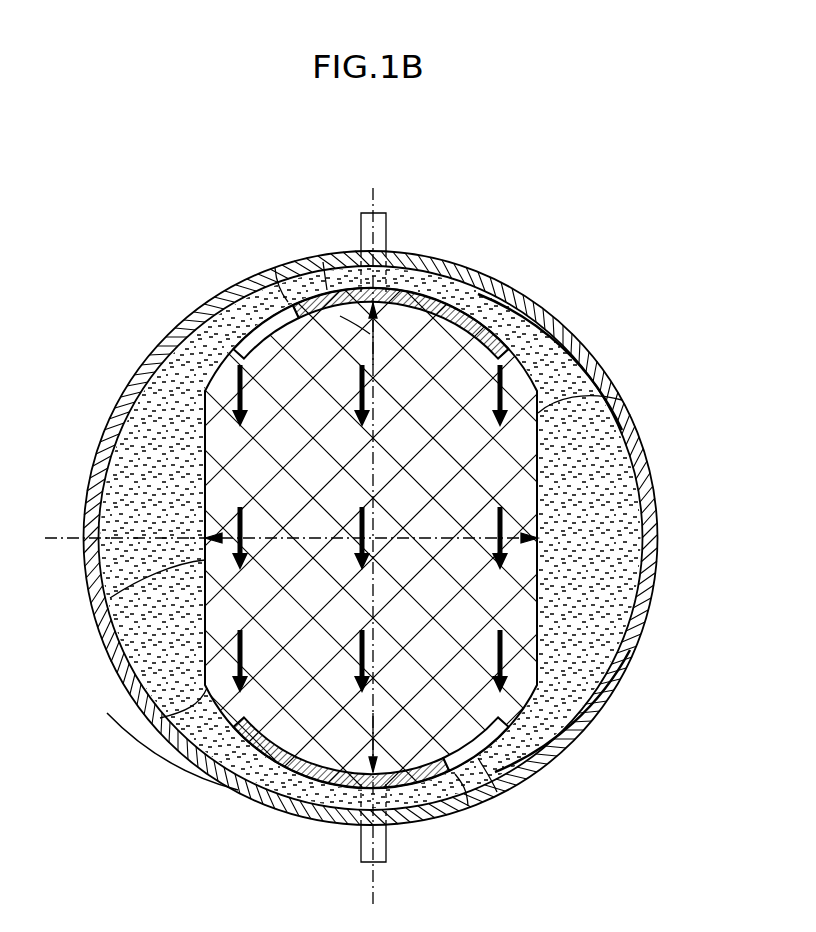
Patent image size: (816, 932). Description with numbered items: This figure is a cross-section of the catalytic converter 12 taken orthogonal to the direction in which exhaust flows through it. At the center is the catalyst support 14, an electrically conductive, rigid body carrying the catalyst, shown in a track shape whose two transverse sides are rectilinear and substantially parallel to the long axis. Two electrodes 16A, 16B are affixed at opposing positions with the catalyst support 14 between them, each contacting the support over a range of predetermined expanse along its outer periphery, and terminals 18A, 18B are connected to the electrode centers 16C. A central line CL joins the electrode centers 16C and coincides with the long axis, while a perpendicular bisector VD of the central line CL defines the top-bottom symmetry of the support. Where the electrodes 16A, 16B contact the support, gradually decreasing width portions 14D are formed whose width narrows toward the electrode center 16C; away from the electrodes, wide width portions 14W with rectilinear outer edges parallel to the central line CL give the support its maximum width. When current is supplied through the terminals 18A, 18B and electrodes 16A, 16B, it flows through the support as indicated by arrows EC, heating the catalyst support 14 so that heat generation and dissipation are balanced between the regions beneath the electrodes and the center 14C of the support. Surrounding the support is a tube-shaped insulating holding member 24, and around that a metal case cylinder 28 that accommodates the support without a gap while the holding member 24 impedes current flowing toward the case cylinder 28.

The catalytic converter 12 is at (546, 226).
The catalyst support 14 is at (150, 718).
The center of the catalyst support 14C is at (380, 532).
The gradually decreasing width portions 14D is at (290, 290).
The wide width portions 14W is at (605, 394).
The electrode 16A is at (488, 298).
The electrode 16B is at (503, 793).
The electrode centers 16C is at (398, 296).
The terminal 18A is at (361, 222).
The terminal 18B is at (360, 852).
The holding member 24 is at (183, 372).
The case cylinder 28 is at (106, 650).
The central line CL is at (376, 190).
The perpendicular bisector VD is at (62, 532).
The current arrows EC is at (358, 378).